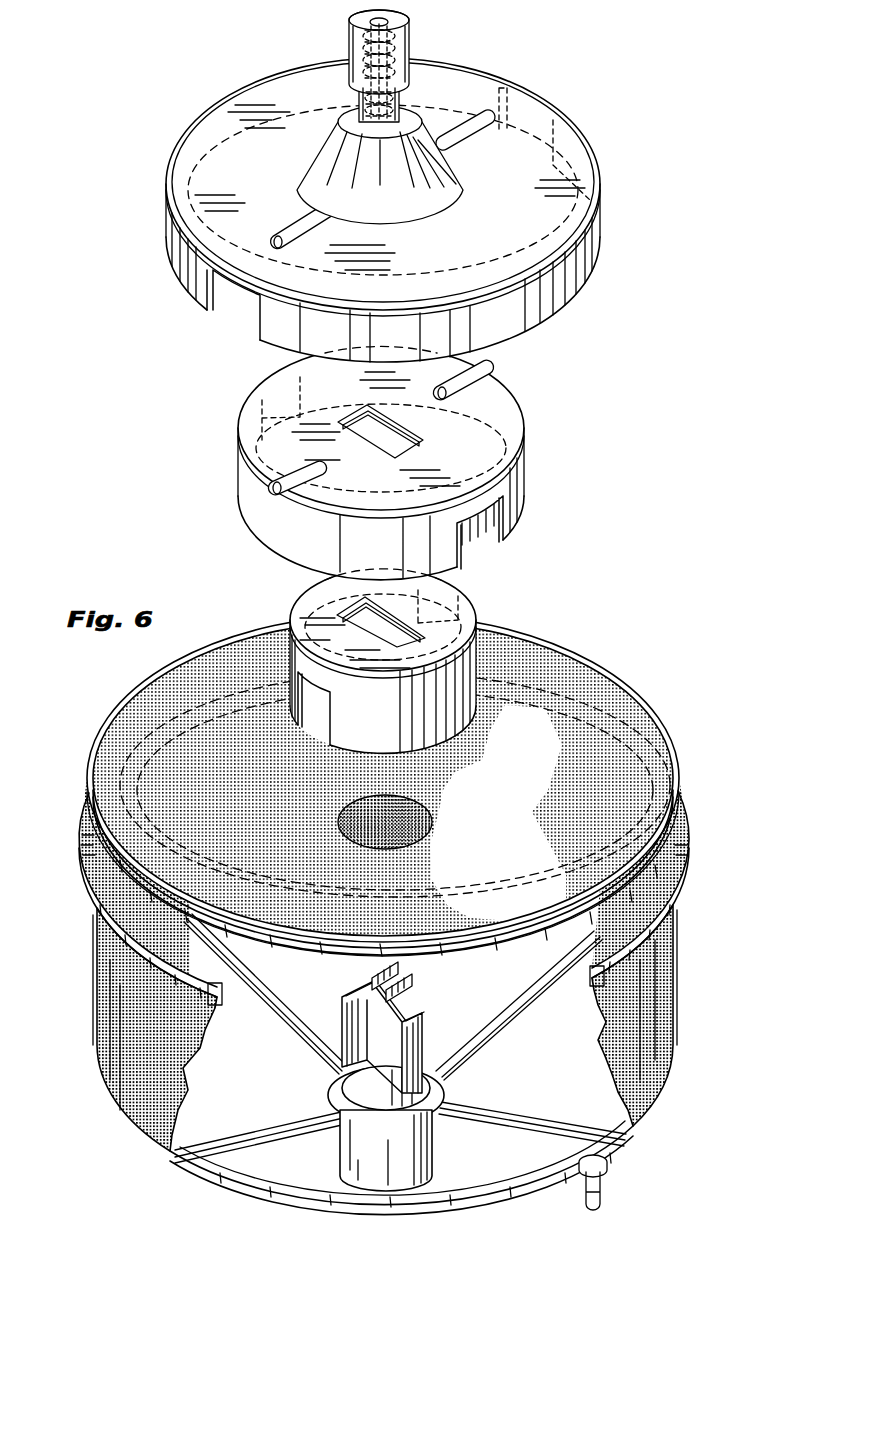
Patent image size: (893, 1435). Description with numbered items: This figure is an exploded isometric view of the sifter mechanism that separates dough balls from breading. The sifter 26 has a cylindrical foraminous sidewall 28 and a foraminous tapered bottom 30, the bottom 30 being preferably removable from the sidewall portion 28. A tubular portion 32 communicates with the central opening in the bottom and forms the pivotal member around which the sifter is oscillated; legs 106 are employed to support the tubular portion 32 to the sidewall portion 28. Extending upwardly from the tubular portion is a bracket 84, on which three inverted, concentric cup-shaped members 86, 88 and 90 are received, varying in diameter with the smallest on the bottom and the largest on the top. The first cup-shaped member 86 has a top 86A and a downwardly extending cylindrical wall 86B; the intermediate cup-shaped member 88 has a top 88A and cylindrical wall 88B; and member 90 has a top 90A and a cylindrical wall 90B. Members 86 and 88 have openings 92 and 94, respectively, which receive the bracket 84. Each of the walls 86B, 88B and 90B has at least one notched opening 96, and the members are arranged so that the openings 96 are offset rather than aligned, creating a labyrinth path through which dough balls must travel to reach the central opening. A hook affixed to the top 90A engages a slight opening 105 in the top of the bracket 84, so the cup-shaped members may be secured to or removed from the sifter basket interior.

The sifter 26 is at (685, 830).
The cylindrical foraminous sidewall 28 is at (657, 959).
The foraminous tapered bottom 30 is at (627, 720).
The tubular portion 32 is at (422, 1145).
The bracket 84 is at (411, 1025).
The first cup-shaped member 86 is at (421, 659).
The top 86A is at (369, 622).
The cylindrical wall 86B is at (458, 676).
The intermediate cup-shaped member 88 is at (398, 463).
The top 88A is at (400, 432).
The cylindrical wall 88B is at (275, 527).
The cup-shaped member 90 is at (386, 186).
The top 90A is at (470, 78).
The cylindrical wall 90B is at (188, 277).
The opening 92 is at (380, 606).
The opening 94 is at (400, 432).
The notched opening 96 is at (257, 326).
The slight opening 105 is at (390, 997).
The legs 106 is at (312, 1112).